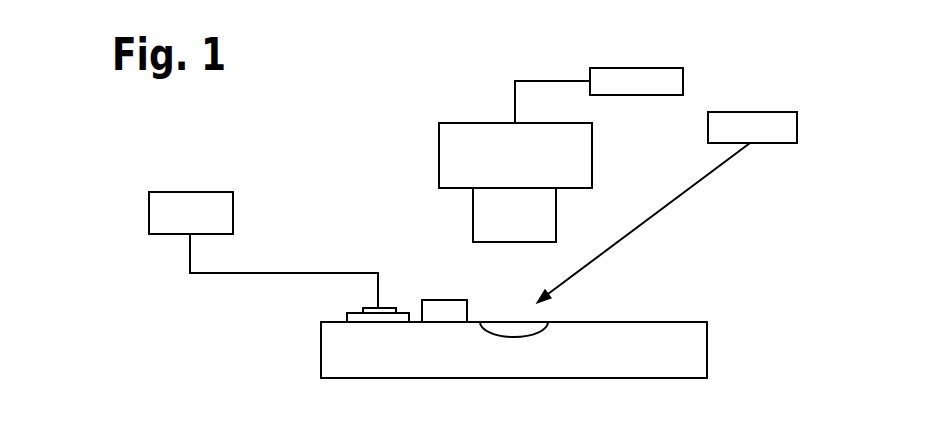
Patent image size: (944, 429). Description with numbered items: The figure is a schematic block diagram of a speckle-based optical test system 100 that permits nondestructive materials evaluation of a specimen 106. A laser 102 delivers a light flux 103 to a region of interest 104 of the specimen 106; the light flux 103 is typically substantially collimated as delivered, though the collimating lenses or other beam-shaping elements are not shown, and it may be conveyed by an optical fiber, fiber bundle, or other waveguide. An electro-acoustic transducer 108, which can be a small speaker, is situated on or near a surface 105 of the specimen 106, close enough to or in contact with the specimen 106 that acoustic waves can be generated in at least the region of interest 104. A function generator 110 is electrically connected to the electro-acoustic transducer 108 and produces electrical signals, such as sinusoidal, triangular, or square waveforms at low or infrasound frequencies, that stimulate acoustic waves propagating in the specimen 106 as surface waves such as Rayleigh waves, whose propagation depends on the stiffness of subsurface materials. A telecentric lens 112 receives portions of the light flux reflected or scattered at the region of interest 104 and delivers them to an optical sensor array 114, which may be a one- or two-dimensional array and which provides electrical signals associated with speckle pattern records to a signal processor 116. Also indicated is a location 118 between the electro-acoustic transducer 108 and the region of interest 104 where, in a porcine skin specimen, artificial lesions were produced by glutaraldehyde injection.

The optical test system 100 is at (803, 300).
The laser 102 is at (738, 112).
The light flux 103 is at (651, 221).
The region of interest 104 is at (511, 321).
The surface 105 is at (647, 322).
The specimen 106 is at (707, 348).
The electro-acoustic transducer 108 is at (370, 308).
The function generator 110 is at (190, 192).
The telecentric lens 112 is at (556, 213).
The optical sensor array 114 is at (497, 123).
The signal processor 116 is at (629, 68).
The location 118 is at (442, 300).